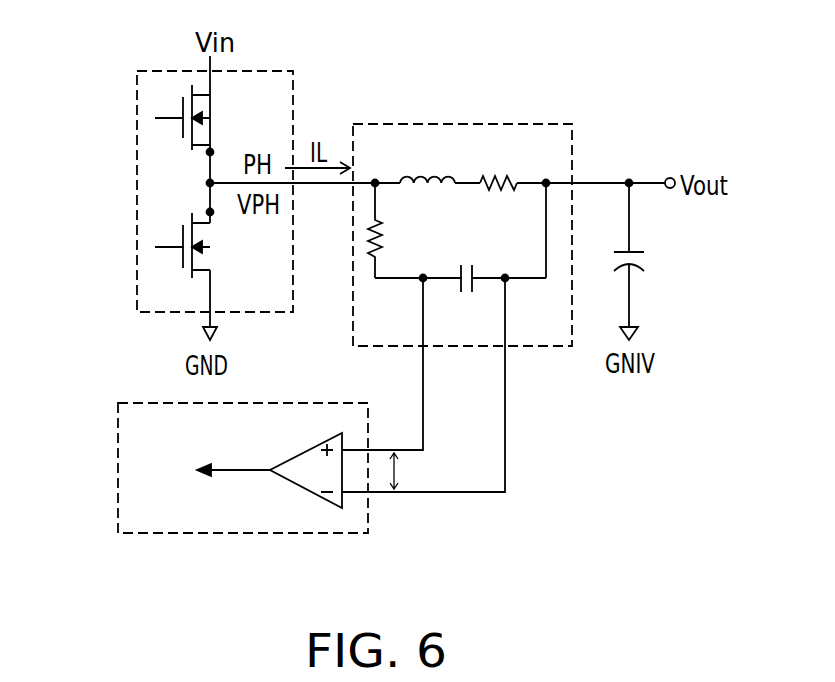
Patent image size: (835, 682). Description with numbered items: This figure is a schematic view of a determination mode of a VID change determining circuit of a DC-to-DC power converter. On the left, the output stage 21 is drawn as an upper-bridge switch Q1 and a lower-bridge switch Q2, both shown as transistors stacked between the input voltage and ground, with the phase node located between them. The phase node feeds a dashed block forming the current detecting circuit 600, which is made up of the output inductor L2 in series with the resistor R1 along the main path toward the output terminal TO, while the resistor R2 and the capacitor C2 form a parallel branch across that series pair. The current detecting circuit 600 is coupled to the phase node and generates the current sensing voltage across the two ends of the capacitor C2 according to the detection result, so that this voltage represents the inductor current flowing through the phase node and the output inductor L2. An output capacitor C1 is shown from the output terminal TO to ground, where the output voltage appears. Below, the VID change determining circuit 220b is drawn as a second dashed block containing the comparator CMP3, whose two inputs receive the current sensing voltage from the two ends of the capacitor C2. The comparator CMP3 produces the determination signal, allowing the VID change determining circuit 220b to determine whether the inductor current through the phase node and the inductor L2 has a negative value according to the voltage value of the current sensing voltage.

The output stage 21 is at (247, 197).
The upper-bridge switch Q1 is at (202, 134).
The lower-bridge switch Q2 is at (202, 255).
The current detecting circuit 600 is at (462, 196).
The output inductor L2 is at (427, 163).
The resistor R1 is at (498, 166).
The resistor R2 is at (395, 230).
The capacitor C2 is at (460, 300).
The output capacitor C1 is at (613, 255).
The output terminal TO is at (666, 178).
The VID change determining circuit 220b is at (235, 491).
The comparator CMP3 is at (305, 489).